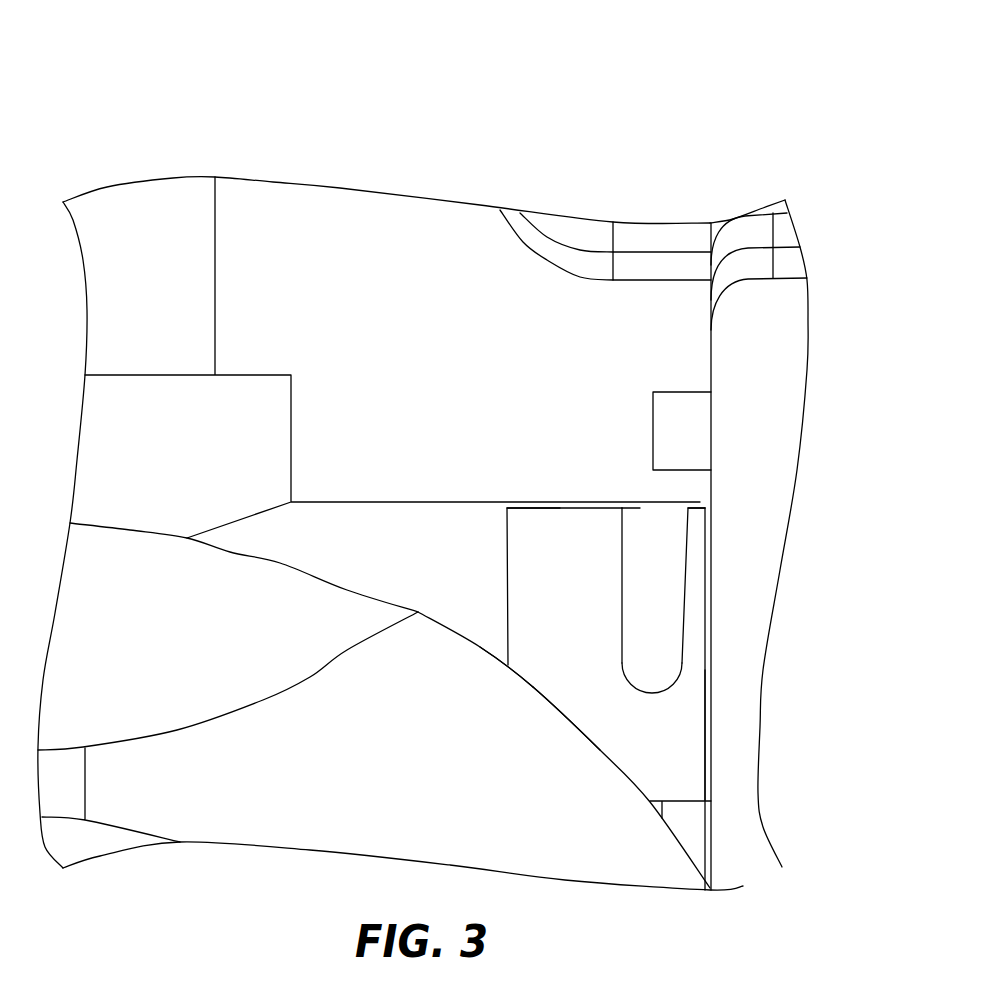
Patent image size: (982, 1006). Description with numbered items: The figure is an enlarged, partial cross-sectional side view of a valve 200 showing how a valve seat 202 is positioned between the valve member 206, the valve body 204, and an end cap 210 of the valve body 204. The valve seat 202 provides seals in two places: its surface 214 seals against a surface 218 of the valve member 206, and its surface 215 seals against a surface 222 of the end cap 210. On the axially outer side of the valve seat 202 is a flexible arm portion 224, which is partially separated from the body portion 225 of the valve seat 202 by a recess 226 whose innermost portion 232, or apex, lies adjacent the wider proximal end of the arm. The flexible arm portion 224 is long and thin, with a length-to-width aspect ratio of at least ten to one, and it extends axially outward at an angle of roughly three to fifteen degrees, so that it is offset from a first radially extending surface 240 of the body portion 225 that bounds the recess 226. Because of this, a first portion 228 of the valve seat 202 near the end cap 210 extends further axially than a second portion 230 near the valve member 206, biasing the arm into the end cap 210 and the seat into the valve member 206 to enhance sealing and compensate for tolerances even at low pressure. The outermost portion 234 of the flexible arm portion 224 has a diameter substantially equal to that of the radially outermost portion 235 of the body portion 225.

The valve 200 is at (482, 92).
The valve seat 202 is at (518, 547).
The valve body 204 is at (227, 290).
The valve member 206 is at (175, 755).
The end cap 210 is at (747, 868).
The surface of the valve seat 214 is at (600, 752).
The surface of the valve seat 215 is at (703, 710).
The surface of the valve member 218 is at (567, 717).
The surface of the end cap 222 is at (712, 627).
The flexible arm portion 224 is at (690, 613).
The body portion 225 is at (543, 668).
The recess 226 is at (650, 526).
The first portion 228 is at (690, 565).
The second portion 230 is at (682, 760).
The innermost portion 232 is at (653, 695).
The outermost portion 234 is at (697, 507).
The radially outermost portion 235 is at (553, 507).
The first radially extending surface 240 is at (623, 537).